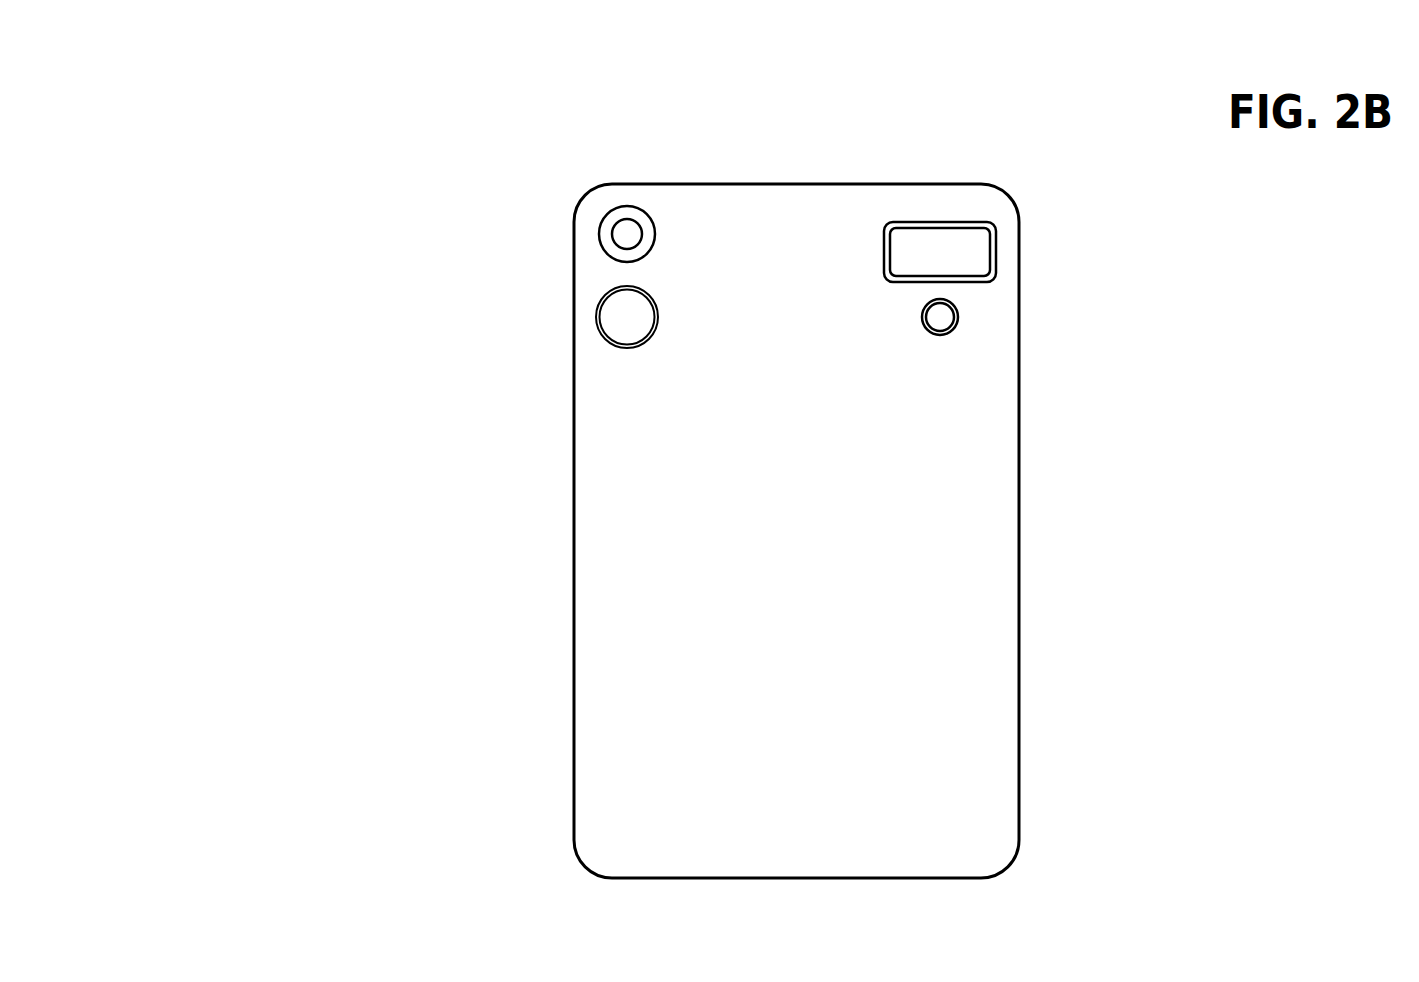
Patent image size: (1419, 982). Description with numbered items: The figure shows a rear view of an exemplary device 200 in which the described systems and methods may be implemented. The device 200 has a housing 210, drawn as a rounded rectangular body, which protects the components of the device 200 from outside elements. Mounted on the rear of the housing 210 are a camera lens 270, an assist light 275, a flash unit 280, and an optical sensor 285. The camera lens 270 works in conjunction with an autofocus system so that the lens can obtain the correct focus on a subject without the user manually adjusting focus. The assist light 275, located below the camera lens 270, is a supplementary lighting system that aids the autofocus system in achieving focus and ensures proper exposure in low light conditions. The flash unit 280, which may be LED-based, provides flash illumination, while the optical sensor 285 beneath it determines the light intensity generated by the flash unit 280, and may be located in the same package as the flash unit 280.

The device 200 is at (254, 63).
The housing 210 is at (574, 525).
The camera lens 270 is at (610, 233).
The assist light 275 is at (627, 319).
The flash unit 280 is at (940, 252).
The optical sensor 285 is at (940, 317).